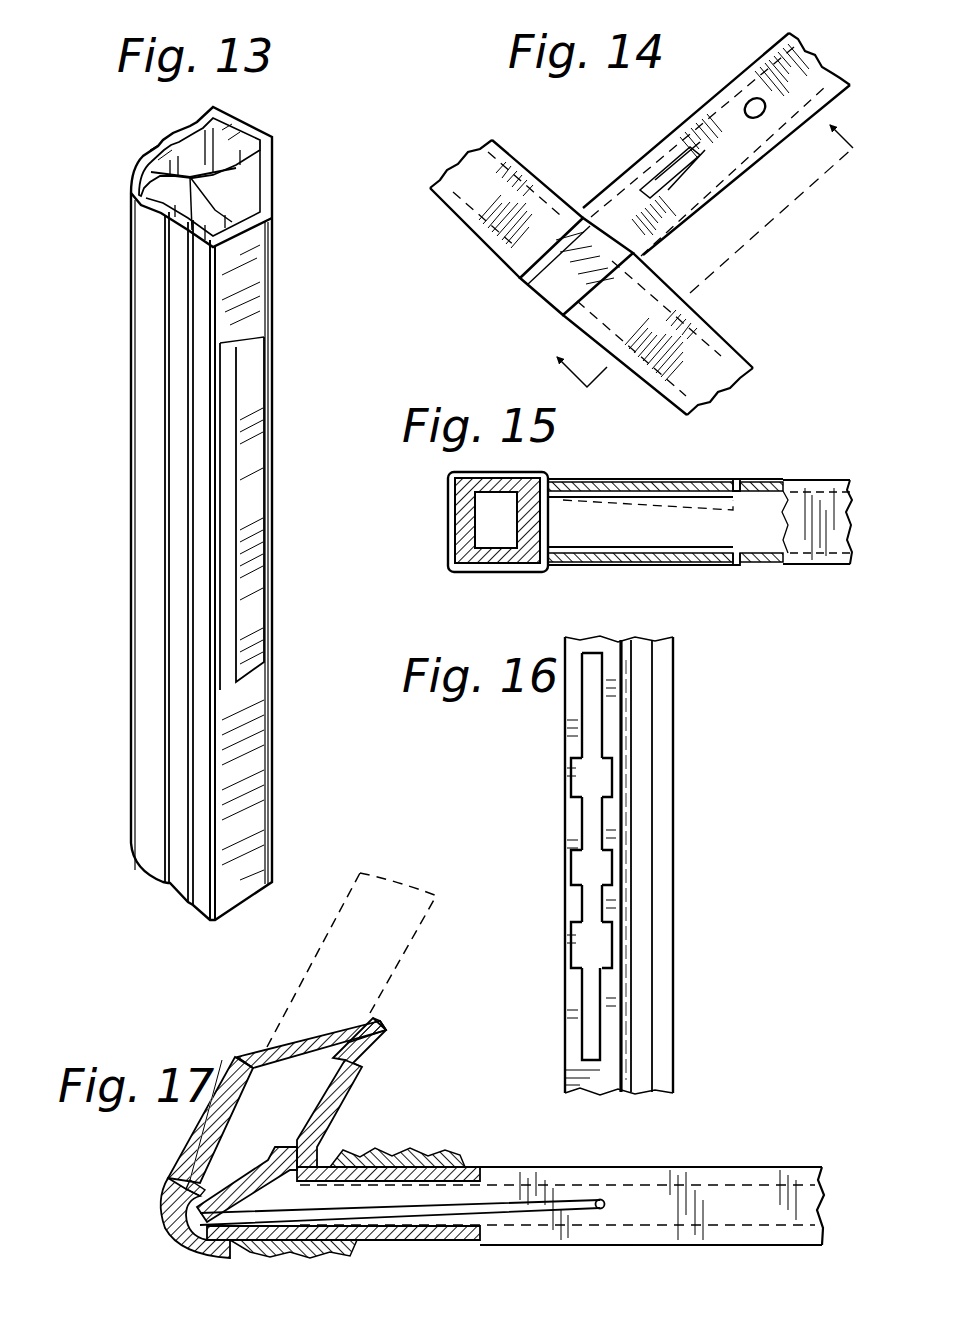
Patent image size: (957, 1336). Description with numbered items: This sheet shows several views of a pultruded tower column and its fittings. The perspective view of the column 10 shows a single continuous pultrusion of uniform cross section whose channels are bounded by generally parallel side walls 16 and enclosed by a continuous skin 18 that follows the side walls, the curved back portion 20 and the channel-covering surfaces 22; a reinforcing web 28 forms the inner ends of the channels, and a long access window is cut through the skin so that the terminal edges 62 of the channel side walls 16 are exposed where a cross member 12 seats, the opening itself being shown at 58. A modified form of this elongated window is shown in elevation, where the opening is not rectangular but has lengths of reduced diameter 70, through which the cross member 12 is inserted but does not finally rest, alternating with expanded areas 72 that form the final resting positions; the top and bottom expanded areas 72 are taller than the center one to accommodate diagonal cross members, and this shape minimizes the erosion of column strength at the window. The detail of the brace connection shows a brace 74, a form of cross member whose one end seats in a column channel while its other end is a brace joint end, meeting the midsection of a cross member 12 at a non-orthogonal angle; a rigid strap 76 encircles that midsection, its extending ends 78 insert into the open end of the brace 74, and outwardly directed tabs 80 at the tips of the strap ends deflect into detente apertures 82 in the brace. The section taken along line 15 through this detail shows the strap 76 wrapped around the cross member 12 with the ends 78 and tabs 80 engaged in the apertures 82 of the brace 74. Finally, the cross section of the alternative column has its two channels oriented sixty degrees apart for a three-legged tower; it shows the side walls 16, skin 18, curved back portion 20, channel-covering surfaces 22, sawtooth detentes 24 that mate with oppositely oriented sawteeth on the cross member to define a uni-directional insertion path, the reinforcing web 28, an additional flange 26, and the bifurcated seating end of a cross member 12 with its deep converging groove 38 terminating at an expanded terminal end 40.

In FIG. 13, the column 10 is at (123, 722).
In FIG. 16, the column 10 is at (553, 884).
In FIG. 15, the cross member 12 is at (455, 532).
In FIG. 17, the cross member 12 is at (310, 952).
In FIG. 14, the section line 15- 15 is at (696, 242).
In FIG. 17, the side walls 16 is at (305, 1127).
In FIG. 17, the skin 18 is at (343, 1030).
In FIG. 17, the curved back portion 20 is at (178, 1226).
In FIG. 17, the channel-covering surfaces 22 is at (310, 1035).
In FIG. 17, the sawtooth detentes 24 is at (338, 1072).
In FIG. 17, the hook flange 26 is at (215, 1130).
In FIG. 17, the reinforcing web 28 is at (232, 1190).
In FIG. 17, the converging groove 38 is at (430, 1225).
In FIG. 17, the expanded terminal end 40 is at (602, 1210).
In FIG. 13, the opening 58 is at (250, 593).
In FIG. 13, the terminal edges 62 is at (214, 420).
In FIG. 17, the terminal edges 62 is at (248, 1055).
In FIG. 16, the lengths of reduced diameter 70 is at (700, 1017).
In FIG. 16, the expanded areas 72 is at (700, 948).
In FIG. 14, the brace 74 is at (728, 88).
In FIG. 15, the brace 74 is at (795, 565).
In FIG. 14, the rigid strap 76 is at (522, 282).
In FIG. 15, the rigid strap 76 is at (448, 508).
In FIG. 14, the extending ends 78 is at (690, 155).
In FIG. 15, the extending ends 78 is at (672, 550).
In FIG. 15, the outwardly directed tabs 80 is at (734, 566).
In FIG. 14, the detente apertures 82 is at (762, 116).
In FIG. 15, the detente apertures 82 is at (748, 479).